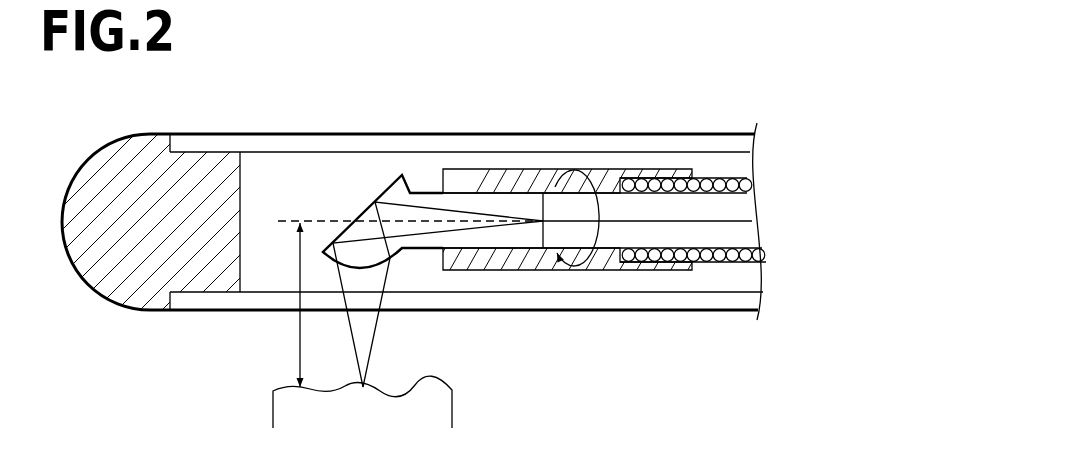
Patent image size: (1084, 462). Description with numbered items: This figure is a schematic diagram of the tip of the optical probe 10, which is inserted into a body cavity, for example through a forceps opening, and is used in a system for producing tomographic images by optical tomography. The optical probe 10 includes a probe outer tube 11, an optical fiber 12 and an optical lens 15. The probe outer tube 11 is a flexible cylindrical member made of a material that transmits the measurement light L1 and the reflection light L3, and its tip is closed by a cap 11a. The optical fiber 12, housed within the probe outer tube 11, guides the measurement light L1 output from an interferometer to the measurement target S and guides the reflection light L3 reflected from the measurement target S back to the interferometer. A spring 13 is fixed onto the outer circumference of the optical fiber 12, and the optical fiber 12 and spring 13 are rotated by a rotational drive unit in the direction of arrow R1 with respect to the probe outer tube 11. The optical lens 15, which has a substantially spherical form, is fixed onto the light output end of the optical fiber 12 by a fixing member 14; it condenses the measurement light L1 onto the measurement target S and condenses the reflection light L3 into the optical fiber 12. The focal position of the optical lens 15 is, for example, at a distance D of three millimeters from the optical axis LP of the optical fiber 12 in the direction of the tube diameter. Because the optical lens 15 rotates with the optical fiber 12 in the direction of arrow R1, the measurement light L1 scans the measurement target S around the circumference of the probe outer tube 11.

The optical probe 10 is at (633, 92).
The probe outer tube 11 is at (478, 142).
The cap 11a is at (155, 143).
The optical fiber 12 is at (663, 235).
The spring 13 is at (730, 253).
The fixing member 14 is at (530, 177).
The optical lens 15 is at (410, 183).
The arrow R1 is at (597, 218).
The optical axis LP is at (392, 221).
The distance D is at (290, 305).
The measurement light L1 is at (385, 327).
The reflection light L3 is at (342, 327).
The measurement target S is at (445, 406).